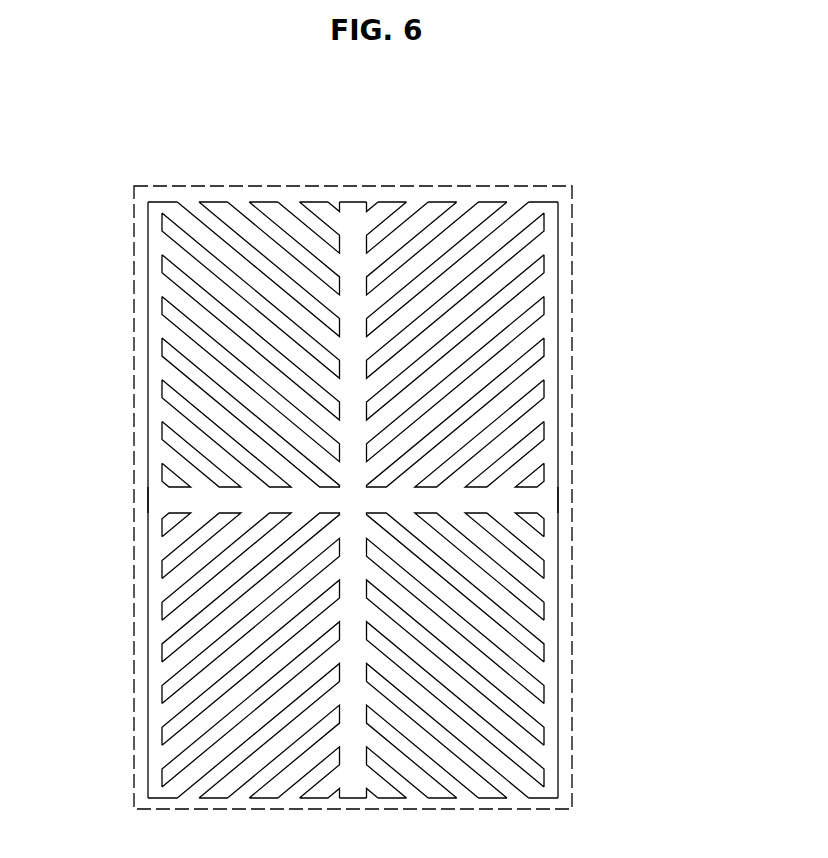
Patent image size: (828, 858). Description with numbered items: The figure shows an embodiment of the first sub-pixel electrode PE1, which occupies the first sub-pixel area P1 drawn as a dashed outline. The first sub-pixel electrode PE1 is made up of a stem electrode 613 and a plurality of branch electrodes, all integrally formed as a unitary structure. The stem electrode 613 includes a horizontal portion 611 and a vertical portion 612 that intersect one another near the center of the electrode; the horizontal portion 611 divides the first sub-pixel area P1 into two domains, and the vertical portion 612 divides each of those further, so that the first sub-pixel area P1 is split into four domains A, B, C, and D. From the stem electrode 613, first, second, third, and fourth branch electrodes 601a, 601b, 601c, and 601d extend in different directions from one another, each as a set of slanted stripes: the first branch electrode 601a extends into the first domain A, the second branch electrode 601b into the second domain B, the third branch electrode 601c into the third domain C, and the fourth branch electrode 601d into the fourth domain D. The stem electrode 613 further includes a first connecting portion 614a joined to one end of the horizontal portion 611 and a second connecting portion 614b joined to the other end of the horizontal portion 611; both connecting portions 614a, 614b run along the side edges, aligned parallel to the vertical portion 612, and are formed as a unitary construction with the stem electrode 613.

The first sub-pixel electrode PE1 is at (373, 448).
The first sub-pixel area P1 is at (197, 186).
The first branch electrode 601a is at (505, 410).
The second branch electrode 601b is at (205, 403).
The third branch electrode 601c is at (205, 713).
The fourth branch electrode 601d is at (498, 718).
The horizontal portion 611 is at (520, 492).
The vertical portion 612 is at (355, 568).
The stem electrode 613 is at (426, 500).
The first connecting portion 614a is at (151, 279).
The second connecting portion 614b is at (556, 290).
The first domain A is at (516, 344).
The second domain B is at (191, 344).
The third domain C is at (191, 655).
The fourth domain D is at (516, 655).